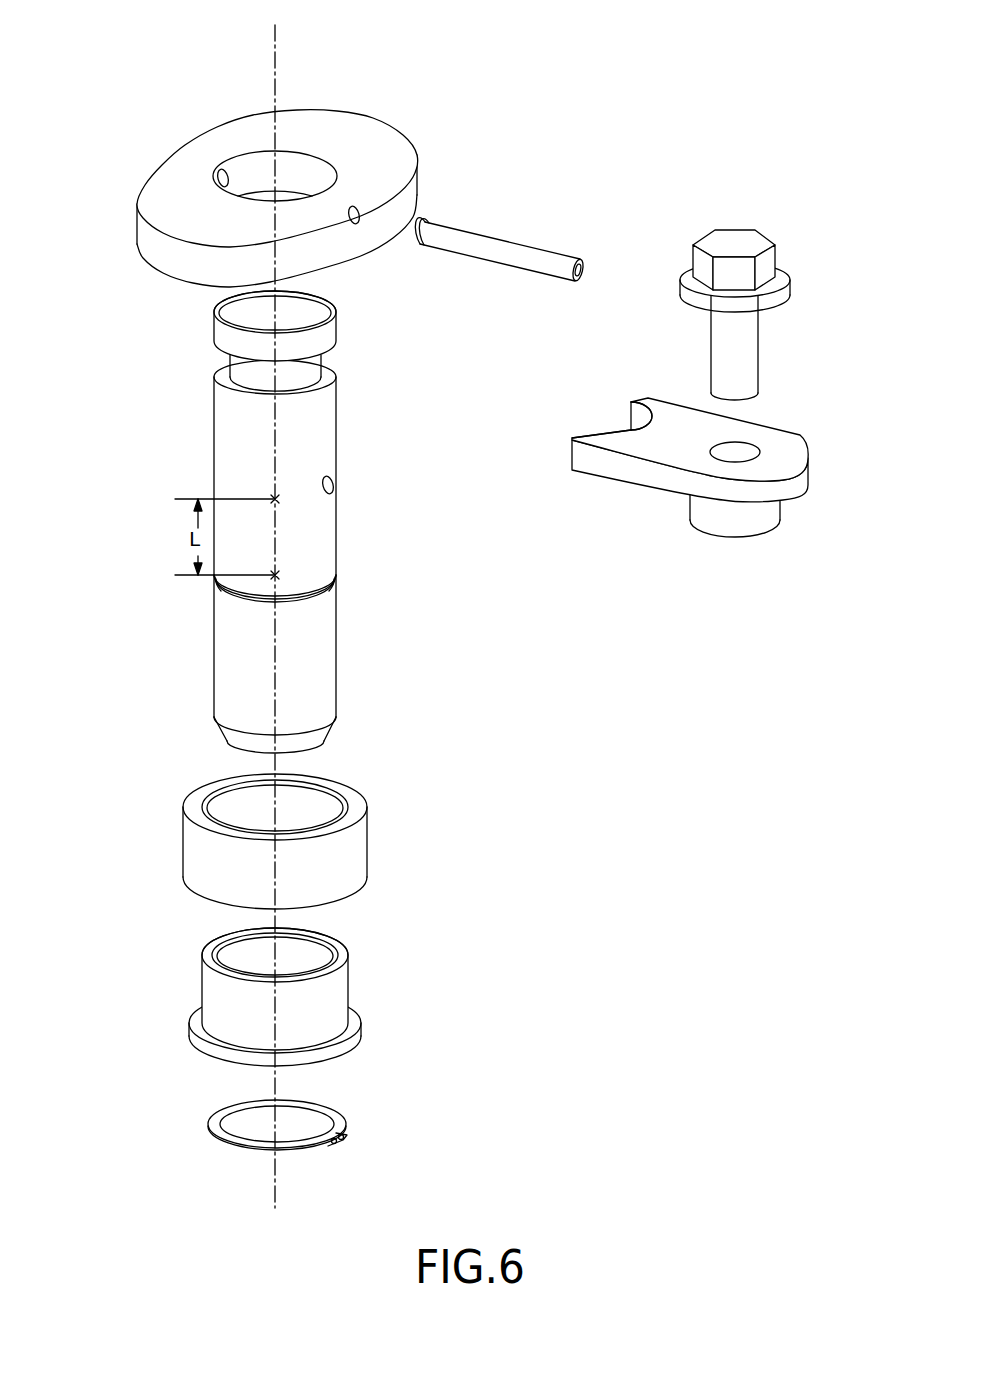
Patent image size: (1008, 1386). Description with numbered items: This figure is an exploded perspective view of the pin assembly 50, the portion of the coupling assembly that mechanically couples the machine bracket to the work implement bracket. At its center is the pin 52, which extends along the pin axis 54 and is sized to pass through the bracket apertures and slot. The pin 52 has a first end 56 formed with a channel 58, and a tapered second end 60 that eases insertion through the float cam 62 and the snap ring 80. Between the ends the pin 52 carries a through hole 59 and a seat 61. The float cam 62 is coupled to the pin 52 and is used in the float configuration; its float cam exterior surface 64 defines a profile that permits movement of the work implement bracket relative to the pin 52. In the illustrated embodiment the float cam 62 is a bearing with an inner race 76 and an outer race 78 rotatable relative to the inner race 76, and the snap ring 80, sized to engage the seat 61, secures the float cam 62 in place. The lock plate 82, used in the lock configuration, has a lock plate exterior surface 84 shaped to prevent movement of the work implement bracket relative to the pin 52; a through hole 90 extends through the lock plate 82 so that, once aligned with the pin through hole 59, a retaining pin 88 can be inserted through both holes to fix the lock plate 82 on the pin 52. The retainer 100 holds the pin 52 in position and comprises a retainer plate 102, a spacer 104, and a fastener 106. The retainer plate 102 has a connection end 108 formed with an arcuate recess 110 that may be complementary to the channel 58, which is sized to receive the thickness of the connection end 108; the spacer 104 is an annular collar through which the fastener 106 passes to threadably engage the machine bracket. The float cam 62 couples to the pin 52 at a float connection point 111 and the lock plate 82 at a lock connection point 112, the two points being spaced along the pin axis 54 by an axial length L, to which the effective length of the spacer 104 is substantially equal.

The pin assembly 50 is at (248, 171).
The pin 52 is at (328, 638).
The pin axis 54 is at (278, 1192).
The first end 56 is at (212, 343).
The channel 58 is at (255, 378).
The through hole 59 is at (333, 483).
The second end 60 is at (340, 735).
The seat 61 is at (338, 576).
The float cam 62 is at (297, 962).
The float cam exterior surface 64 is at (350, 851).
The inner race 76 is at (333, 1008).
The outer race 78 is at (333, 885).
The snap ring 80 is at (350, 1124).
The lock plate 82 is at (261, 171).
The lock plate exterior surface 84 is at (157, 252).
The retaining pin 88 is at (502, 247).
The through hole 90 is at (223, 172).
The retainer 100 is at (713, 370).
The retainer plate 102 is at (662, 469).
The spacer 104 is at (725, 523).
The fastener 106 is at (733, 242).
The connection end 108 is at (645, 400).
The arcuate recess 110 is at (612, 425).
The float connection point 111 is at (273, 577).
The lock connection point 112 is at (273, 498).